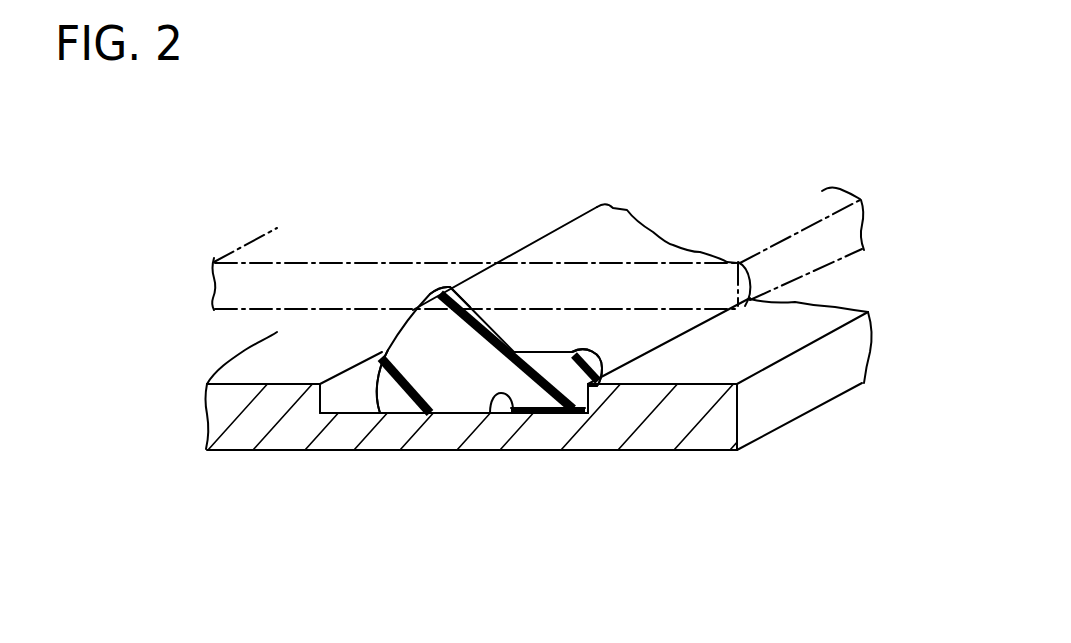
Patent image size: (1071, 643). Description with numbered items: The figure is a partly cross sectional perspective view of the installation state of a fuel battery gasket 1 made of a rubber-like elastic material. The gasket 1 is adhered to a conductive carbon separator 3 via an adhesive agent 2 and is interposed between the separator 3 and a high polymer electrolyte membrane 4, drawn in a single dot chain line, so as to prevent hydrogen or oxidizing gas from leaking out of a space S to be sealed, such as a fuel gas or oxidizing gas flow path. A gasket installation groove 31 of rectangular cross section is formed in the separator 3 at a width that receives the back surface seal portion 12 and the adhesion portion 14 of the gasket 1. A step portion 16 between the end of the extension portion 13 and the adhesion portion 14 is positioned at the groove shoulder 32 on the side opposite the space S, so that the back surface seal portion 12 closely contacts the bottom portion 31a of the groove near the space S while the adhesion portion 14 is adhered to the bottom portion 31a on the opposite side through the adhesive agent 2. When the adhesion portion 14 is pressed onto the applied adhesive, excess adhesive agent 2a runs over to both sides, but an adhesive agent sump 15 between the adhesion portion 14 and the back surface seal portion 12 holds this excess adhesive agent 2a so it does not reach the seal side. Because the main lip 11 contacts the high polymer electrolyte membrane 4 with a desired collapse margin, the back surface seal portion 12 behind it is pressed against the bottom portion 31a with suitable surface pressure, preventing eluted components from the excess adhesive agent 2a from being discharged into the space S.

The space to be sealed S is at (205, 347).
The gasket 1 is at (468, 345).
The main lip 11 is at (447, 291).
The back surface seal portion 12 is at (444, 413).
The extension portion 13 is at (600, 380).
The adhesion portion 14 is at (553, 413).
The adhesive agent sump 15 is at (487, 413).
The step portion 16 is at (594, 397).
The adhesive agent 2 is at (537, 413).
The excess adhesive agent 2a is at (507, 413).
The separator 3 is at (680, 445).
The gasket installation groove 31 is at (352, 380).
The bottom portion of the gasket installation groove 31a is at (483, 413).
The groove shoulder 32 is at (617, 378).
The high polymer electrolyte membrane 4 is at (768, 210).